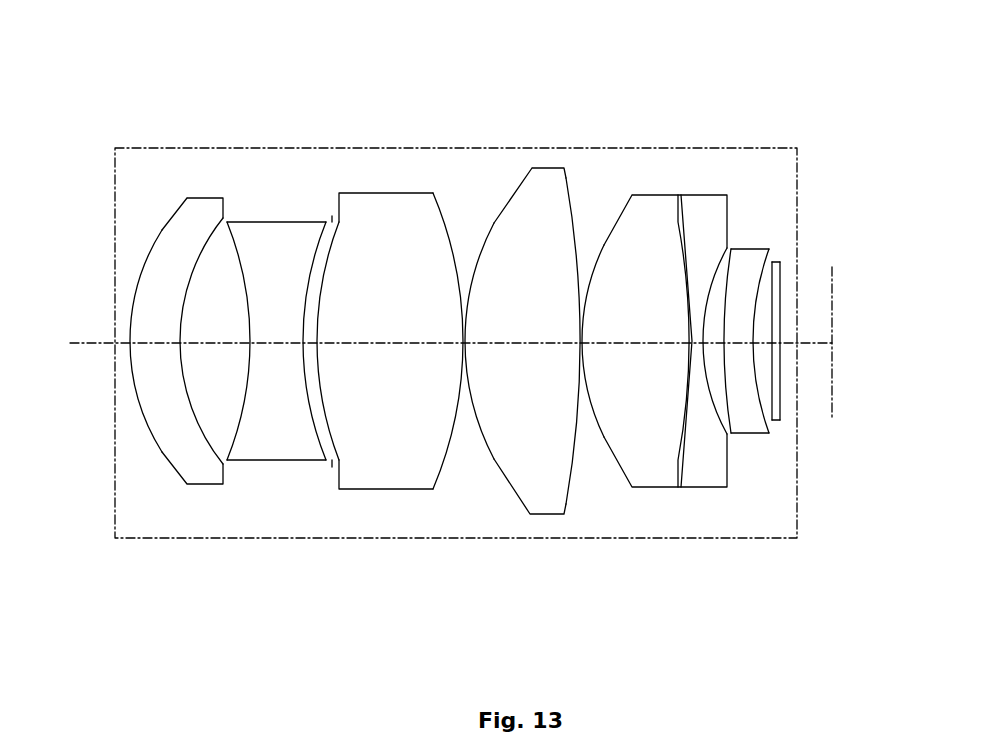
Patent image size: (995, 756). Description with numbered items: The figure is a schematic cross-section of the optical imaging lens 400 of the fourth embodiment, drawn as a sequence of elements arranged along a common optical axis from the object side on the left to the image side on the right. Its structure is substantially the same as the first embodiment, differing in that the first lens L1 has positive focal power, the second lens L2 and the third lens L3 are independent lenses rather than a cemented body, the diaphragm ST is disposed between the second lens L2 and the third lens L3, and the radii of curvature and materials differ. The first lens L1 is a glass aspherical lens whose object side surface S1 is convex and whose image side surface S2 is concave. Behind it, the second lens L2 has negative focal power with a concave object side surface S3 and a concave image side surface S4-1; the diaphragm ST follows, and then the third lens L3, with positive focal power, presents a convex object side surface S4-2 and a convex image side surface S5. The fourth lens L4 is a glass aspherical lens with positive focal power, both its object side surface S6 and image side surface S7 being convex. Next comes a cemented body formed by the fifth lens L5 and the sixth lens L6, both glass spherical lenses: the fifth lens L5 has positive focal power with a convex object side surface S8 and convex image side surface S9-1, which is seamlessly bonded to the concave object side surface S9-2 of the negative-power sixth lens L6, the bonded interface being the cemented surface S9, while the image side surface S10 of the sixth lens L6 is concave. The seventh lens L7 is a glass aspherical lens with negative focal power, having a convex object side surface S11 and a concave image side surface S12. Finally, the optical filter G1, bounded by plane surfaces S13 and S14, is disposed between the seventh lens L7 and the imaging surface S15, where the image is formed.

The optical imaging lens 400 is at (99, 154).
The first lens L1 is at (162, 363).
The second lens L2 is at (247, 365).
The third lens L3 is at (388, 355).
The fourth lens L4 is at (520, 367).
The fifth lens L5 is at (638, 332).
The sixth lens L6 is at (773, 364).
The seventh lens L7 is at (757, 268).
The optical filter G1 is at (875, 364).
The diaphragm ST is at (331, 468).
The object side surface of the first lens S1 is at (162, 452).
The image side surface of the first lens S2 is at (198, 427).
The object side surface of the second lens S3 is at (231, 460).
The image side surface of the second lens S4-1 is at (312, 412).
The object side surface of the third lens S4-2 is at (317, 344).
The image side surface of the third lens S5 is at (442, 489).
The object side surface of the fourth lens S6 is at (490, 458).
The image side surface of the fourth lens S7 is at (567, 508).
The object side surface of the fifth lens S8 is at (610, 453).
The cemented surface of the fifth lens and the sixth lens S9 is at (679, 245).
The image side surface of the fifth lens S9-1 is at (687, 330).
The object side surface of the sixth lens S9-2 is at (691, 307).
The image side surface of the sixth lens S10 is at (703, 345).
The object side surface of the seventh lens S11 is at (733, 433).
The image side surface of the seventh lens S12 is at (762, 410).
The object side surface of the optical filter S13 is at (780, 400).
The image side surface of the optical filter S14 is at (780, 343).
The imaging surface S15 is at (832, 343).